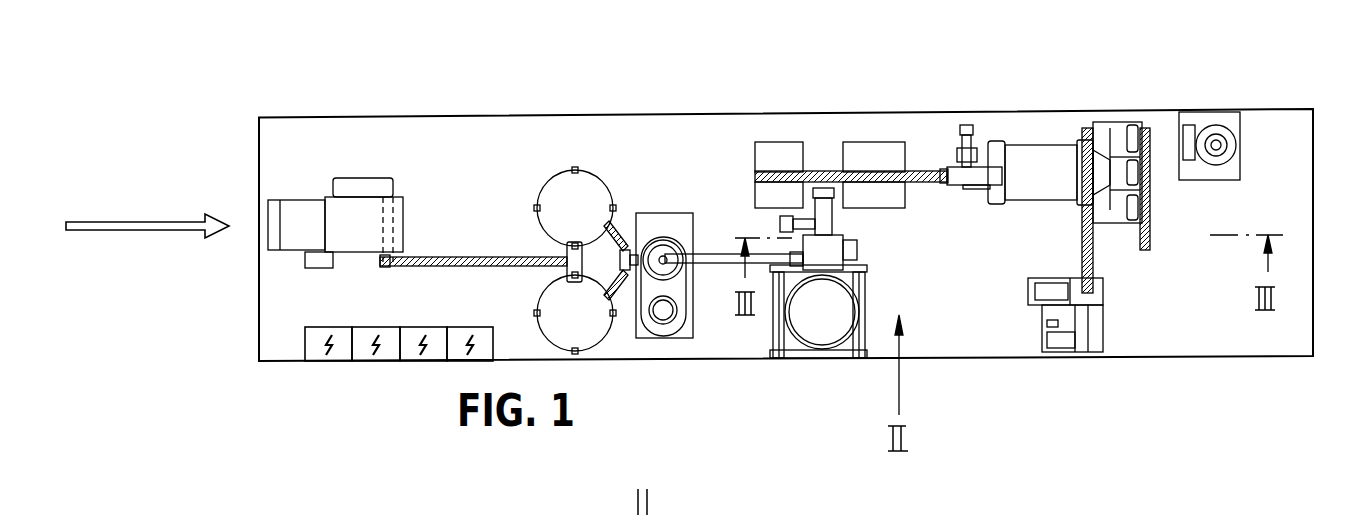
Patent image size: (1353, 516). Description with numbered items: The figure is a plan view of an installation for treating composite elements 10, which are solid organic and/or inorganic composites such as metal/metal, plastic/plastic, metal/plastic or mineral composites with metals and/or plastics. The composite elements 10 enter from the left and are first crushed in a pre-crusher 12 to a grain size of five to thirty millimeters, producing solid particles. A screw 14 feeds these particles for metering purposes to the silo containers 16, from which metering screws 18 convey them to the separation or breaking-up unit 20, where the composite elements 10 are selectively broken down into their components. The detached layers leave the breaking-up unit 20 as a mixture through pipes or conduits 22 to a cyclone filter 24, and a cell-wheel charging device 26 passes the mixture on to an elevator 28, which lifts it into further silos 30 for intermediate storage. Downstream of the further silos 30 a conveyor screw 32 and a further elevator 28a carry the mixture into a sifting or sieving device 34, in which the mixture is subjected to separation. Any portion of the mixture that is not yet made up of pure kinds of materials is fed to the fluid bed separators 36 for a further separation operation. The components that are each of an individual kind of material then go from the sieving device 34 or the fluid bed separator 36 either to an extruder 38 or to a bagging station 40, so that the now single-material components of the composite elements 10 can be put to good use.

The composite elements 10 is at (133, 232).
The pre-crusher 12 is at (353, 233).
The screw 14 is at (473, 266).
The silo containers 16 is at (558, 300).
The metering screws 18 is at (628, 250).
The separation or breaking-up unit 20 is at (663, 268).
The pipes or conduits 22 is at (733, 257).
The cyclone filter 24 is at (805, 326).
The cell-wheel charging device 26 is at (857, 248).
The elevator 28 is at (835, 218).
The further elevator 28a is at (977, 168).
The further silos 30 is at (778, 152).
The conveyor screw 32 is at (915, 180).
The sifting or sieving device 34 is at (1053, 165).
The fluid bed separators 36 is at (1118, 148).
The extruder 38 is at (1081, 340).
The bagging station 40 is at (1216, 142).